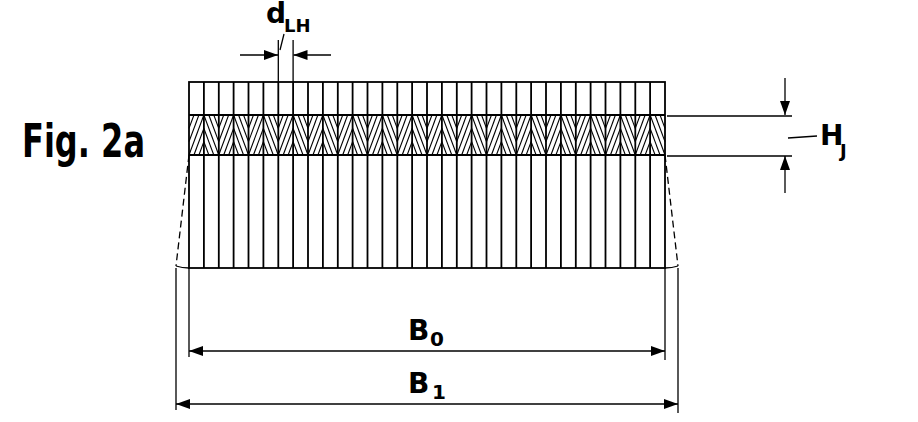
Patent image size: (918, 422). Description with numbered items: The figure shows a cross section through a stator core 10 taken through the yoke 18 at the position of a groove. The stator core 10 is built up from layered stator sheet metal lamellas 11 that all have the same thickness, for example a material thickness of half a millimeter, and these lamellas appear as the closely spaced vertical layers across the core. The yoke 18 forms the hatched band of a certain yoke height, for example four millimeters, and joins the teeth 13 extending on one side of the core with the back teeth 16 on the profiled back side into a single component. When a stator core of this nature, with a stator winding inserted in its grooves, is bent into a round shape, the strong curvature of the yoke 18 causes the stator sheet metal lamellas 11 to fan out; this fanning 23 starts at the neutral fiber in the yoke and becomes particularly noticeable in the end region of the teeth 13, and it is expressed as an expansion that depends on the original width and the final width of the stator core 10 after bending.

The stator core 10 is at (425, 72).
The back teeth 16 is at (513, 72).
The stator sheet metal lamellas 11 is at (597, 98).
The yoke 18 is at (678, 140).
The teeth 13 is at (518, 280).
The fanning 23 is at (176, 233).